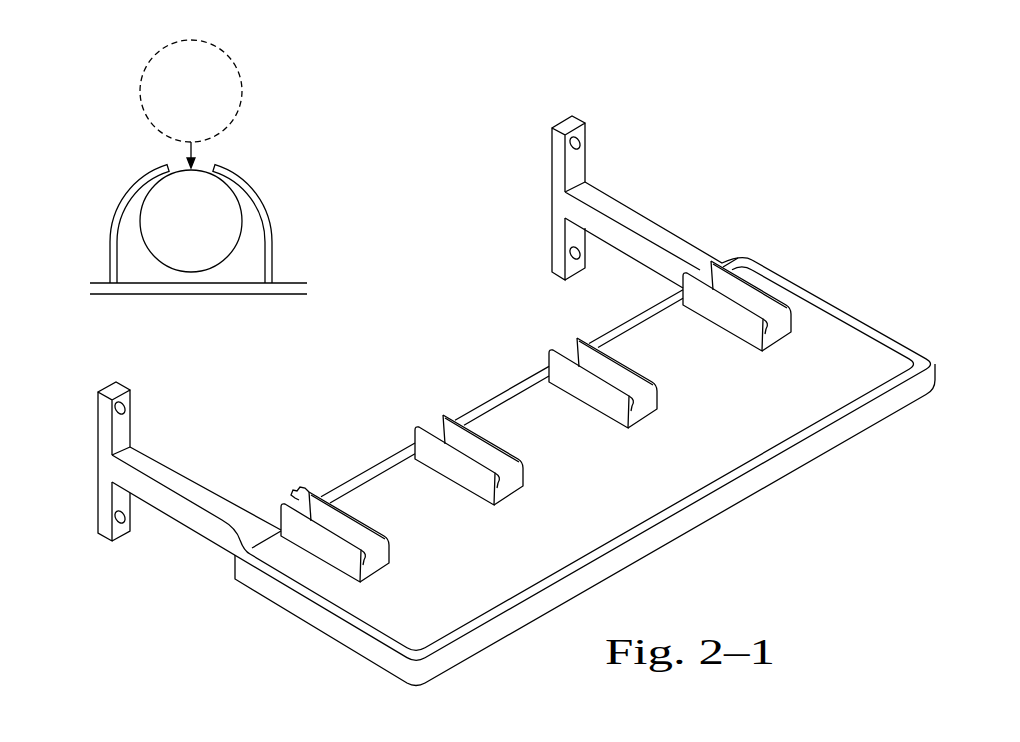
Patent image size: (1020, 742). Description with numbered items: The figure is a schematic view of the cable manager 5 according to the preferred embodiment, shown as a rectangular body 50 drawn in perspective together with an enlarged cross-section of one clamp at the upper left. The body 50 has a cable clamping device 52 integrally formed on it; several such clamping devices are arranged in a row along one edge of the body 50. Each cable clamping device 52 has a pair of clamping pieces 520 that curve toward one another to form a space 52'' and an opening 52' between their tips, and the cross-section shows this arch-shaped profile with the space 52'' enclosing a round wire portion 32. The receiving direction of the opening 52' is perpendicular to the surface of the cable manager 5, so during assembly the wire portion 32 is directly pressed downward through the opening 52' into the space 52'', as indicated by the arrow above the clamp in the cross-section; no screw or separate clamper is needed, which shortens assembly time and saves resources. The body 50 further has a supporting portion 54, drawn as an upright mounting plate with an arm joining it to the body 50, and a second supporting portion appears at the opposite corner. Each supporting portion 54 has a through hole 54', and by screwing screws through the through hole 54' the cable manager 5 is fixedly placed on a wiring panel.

The cable manager 5 is at (472, 378).
The wire portion 32 is at (200, 244).
The body 50 is at (270, 290).
The cable clamping device 52 is at (405, 387).
The opening 52' is at (197, 303).
The space 52'' is at (383, 417).
The clamping pieces 520 is at (253, 199).
The supporting portion 54 is at (637, 202).
The through hole 54' is at (167, 441).